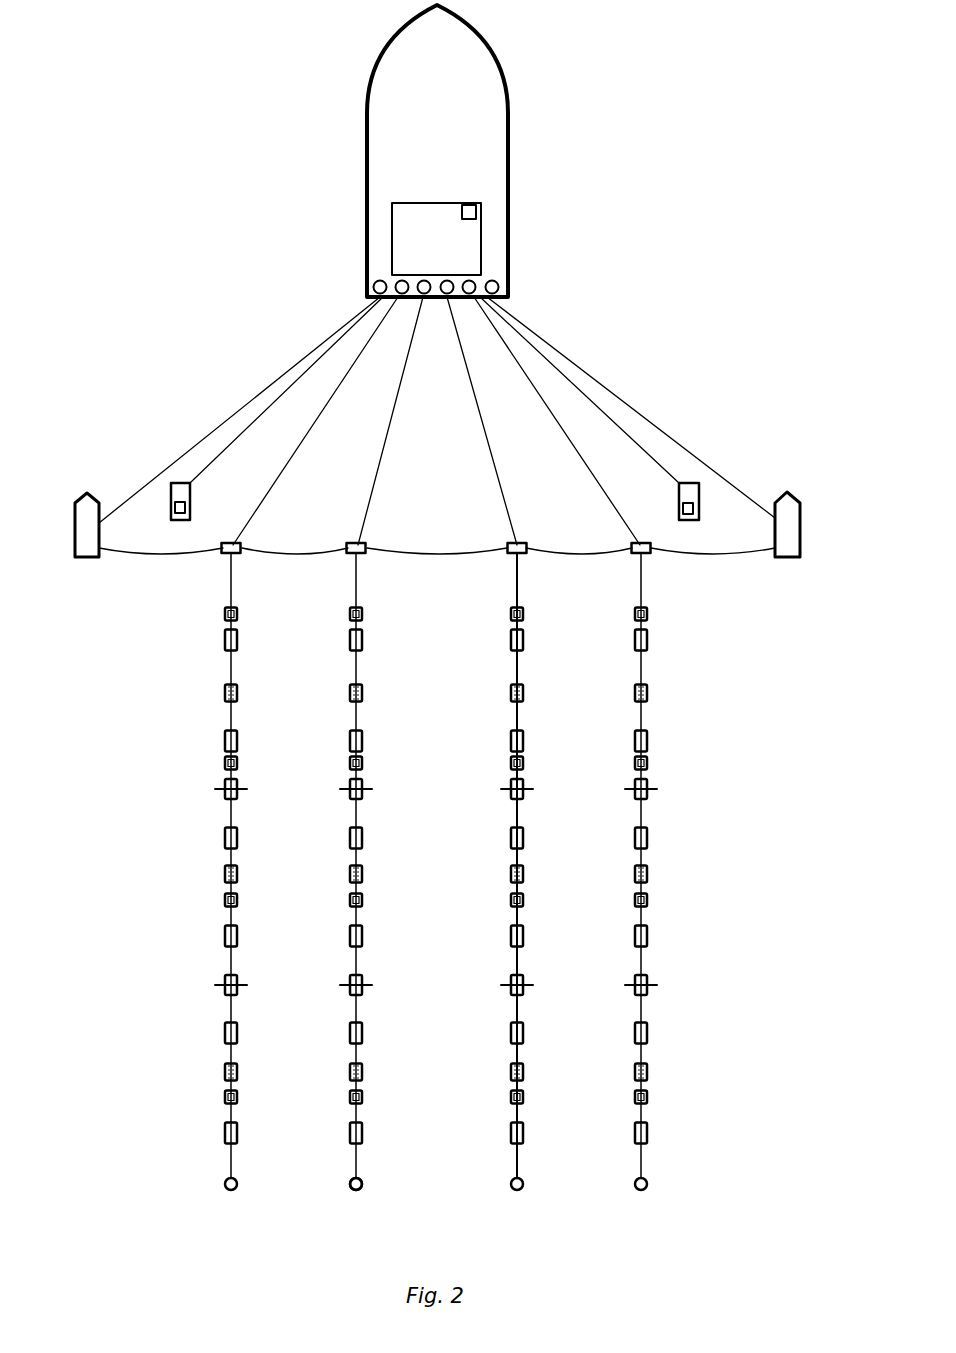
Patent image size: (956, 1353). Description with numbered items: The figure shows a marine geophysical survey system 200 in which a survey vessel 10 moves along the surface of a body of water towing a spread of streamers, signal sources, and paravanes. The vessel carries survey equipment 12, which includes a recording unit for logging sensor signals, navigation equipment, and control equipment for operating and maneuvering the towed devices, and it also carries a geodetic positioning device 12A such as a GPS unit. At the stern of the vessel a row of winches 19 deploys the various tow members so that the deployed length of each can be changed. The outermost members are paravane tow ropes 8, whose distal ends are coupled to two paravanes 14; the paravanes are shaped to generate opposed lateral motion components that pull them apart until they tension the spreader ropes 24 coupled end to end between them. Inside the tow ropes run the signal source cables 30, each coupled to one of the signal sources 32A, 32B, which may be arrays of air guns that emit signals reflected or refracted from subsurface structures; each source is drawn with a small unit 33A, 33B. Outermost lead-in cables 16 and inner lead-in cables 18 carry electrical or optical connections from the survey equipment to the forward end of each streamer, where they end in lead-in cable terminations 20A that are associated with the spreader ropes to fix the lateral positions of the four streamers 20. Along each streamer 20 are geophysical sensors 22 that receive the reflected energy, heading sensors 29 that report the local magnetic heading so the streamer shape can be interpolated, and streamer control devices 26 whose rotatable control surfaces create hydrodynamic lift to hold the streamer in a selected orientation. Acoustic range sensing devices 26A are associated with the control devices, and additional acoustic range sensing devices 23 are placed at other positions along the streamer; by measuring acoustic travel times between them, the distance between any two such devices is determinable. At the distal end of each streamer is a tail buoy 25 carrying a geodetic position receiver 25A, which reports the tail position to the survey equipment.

The marine geophysical survey system 200 is at (146, 50).
The survey vessel 10 is at (422, 130).
The survey equipment 12 is at (458, 203).
The geodetic positioning device 12A is at (477, 212).
The winch 19 is at (373, 288).
The paravane tow rope 8 is at (268, 388).
The signal source cable 30 is at (335, 353).
The outermost lead-in cable 16 is at (253, 515).
The inner lead-in cable 18 is at (377, 462).
The paravane 14 is at (75, 538).
The signal source 32A is at (181, 483).
The signal source 32B is at (689, 483).
The source position sensor 33A is at (175, 510).
The source position sensor 33B is at (694, 510).
The spreader rope 24 is at (402, 552).
The lead-in cable termination 20A is at (355, 543).
The streamer 20 is at (357, 588).
The heading sensor 29 is at (362, 612).
The geophysical sensor 22 is at (362, 640).
The acoustic range sensing device 23 is at (362, 693).
The streamer control device 26 is at (362, 782).
The acoustic range sensing device 26A is at (372, 790).
The tail buoy 25 is at (358, 1190).
The geodetic position receiver 25A is at (362, 1184).